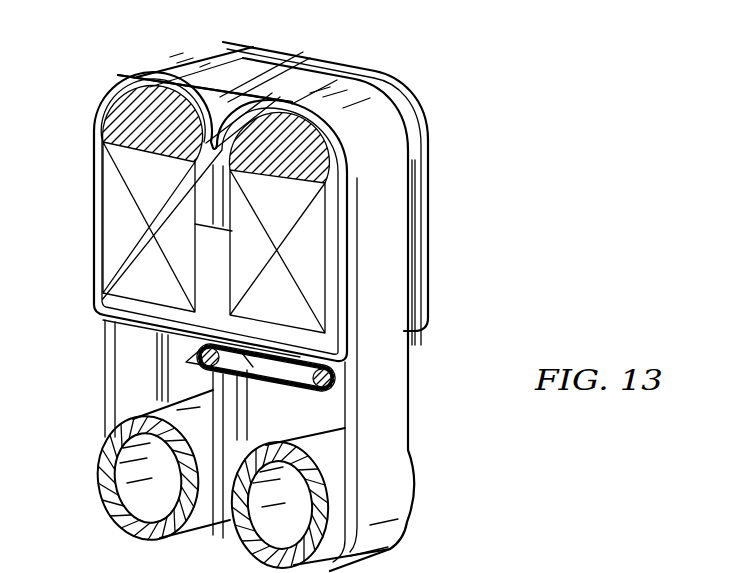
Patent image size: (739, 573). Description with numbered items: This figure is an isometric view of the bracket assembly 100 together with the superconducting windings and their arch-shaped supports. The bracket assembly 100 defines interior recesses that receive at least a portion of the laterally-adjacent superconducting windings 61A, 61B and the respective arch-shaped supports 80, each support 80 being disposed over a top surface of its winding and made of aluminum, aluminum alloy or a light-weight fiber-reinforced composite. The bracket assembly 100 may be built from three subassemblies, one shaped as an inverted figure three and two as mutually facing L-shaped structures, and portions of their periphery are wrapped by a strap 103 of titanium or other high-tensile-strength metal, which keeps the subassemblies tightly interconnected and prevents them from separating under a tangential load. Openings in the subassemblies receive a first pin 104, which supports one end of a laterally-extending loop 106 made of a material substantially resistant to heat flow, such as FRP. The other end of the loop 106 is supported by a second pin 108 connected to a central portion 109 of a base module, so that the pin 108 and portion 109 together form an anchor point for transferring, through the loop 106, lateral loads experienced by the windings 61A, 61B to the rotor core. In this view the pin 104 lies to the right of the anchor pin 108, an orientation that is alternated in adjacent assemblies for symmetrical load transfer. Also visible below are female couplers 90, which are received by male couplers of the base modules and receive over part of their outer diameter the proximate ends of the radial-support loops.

The bracket assembly 100 is at (93, 177).
The arch-shaped support 80 is at (130, 118).
The strap 103 is at (240, 46).
The superconducting winding 61A is at (120, 232).
The superconducting winding 61B is at (310, 257).
The first pin 104 is at (331, 377).
The laterally-extending loop 106 is at (302, 392).
The second pin 108 is at (203, 361).
The central portion 109 is at (200, 353).
The female coupler 90 is at (110, 513).